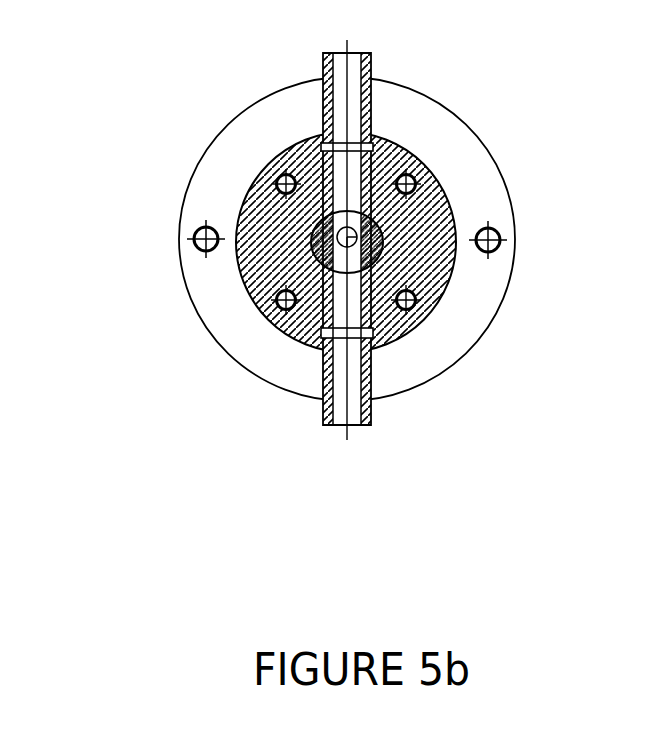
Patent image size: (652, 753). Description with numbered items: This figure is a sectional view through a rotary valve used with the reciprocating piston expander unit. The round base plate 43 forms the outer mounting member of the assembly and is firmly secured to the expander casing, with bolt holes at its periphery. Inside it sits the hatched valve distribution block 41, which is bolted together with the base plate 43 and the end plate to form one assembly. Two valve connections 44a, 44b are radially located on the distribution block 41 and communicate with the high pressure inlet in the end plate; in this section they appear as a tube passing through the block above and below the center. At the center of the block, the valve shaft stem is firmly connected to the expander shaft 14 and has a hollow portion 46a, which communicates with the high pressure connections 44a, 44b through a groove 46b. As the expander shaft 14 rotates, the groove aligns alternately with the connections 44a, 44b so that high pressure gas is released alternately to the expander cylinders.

The base plate 43 is at (233, 153).
The valve distribution block 41 is at (388, 140).
The valve connection 44a is at (323, 79).
The valve connection 44b is at (371, 405).
The hollow portion 46a is at (386, 238).
The groove 46b is at (400, 272).
The expander shaft 14 is at (325, 270).